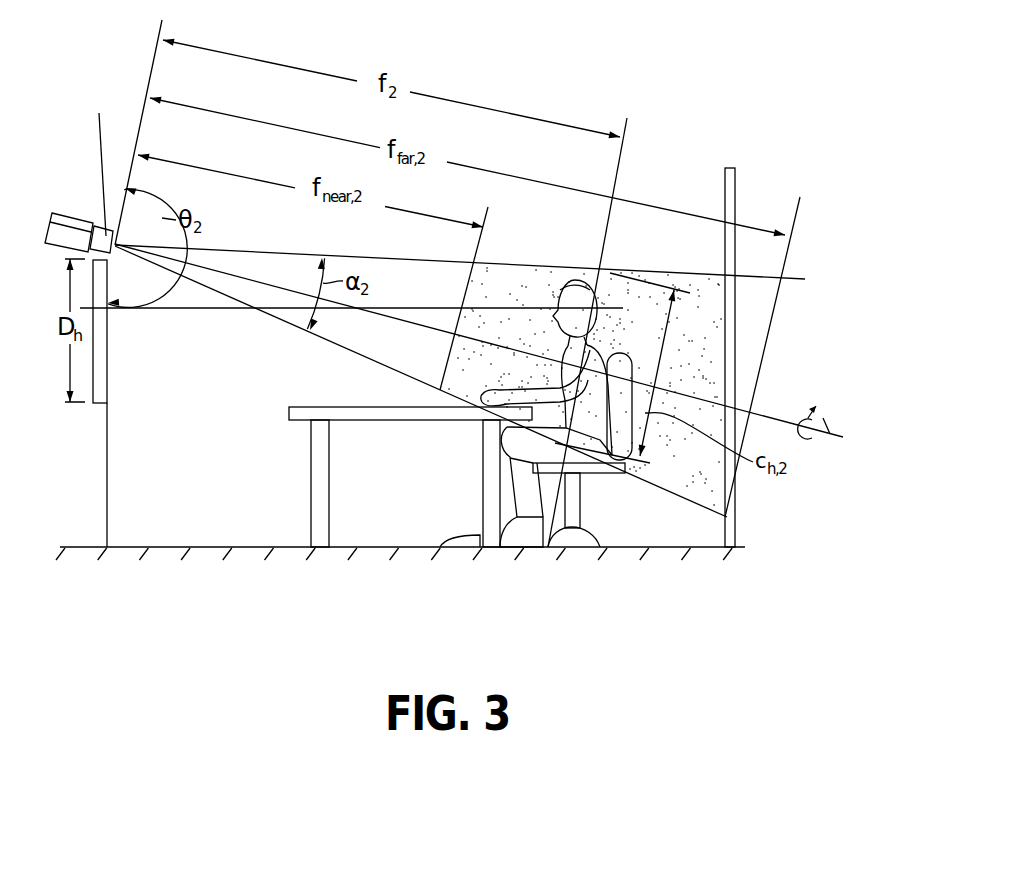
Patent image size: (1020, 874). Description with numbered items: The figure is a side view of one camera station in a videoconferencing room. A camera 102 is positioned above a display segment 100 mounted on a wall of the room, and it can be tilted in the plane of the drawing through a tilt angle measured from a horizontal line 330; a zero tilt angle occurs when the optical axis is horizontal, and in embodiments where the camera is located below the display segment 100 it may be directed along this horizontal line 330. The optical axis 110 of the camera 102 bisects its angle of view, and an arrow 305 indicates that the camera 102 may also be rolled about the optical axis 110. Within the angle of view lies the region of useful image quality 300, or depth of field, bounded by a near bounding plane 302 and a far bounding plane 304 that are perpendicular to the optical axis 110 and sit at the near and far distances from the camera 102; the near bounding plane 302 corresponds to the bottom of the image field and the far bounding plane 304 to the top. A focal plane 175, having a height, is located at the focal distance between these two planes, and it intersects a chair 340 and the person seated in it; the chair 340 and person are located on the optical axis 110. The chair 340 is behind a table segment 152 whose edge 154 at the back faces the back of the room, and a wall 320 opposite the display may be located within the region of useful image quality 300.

The camera 102 is at (60, 214).
The optical axis 110 is at (262, 284).
The horizontal line 330 is at (155, 310).
The display segment 100 is at (100, 380).
The near bounding plane 302 is at (465, 290).
The far bounding plane 304 is at (768, 333).
The wall 320 is at (737, 181).
The region of useful image quality 300 is at (740, 500).
The arrow 305 is at (818, 440).
The table segment 152 is at (400, 420).
The chair 340 is at (593, 478).
The focal plane 175 is at (592, 283).
The edge 154 is at (548, 547).